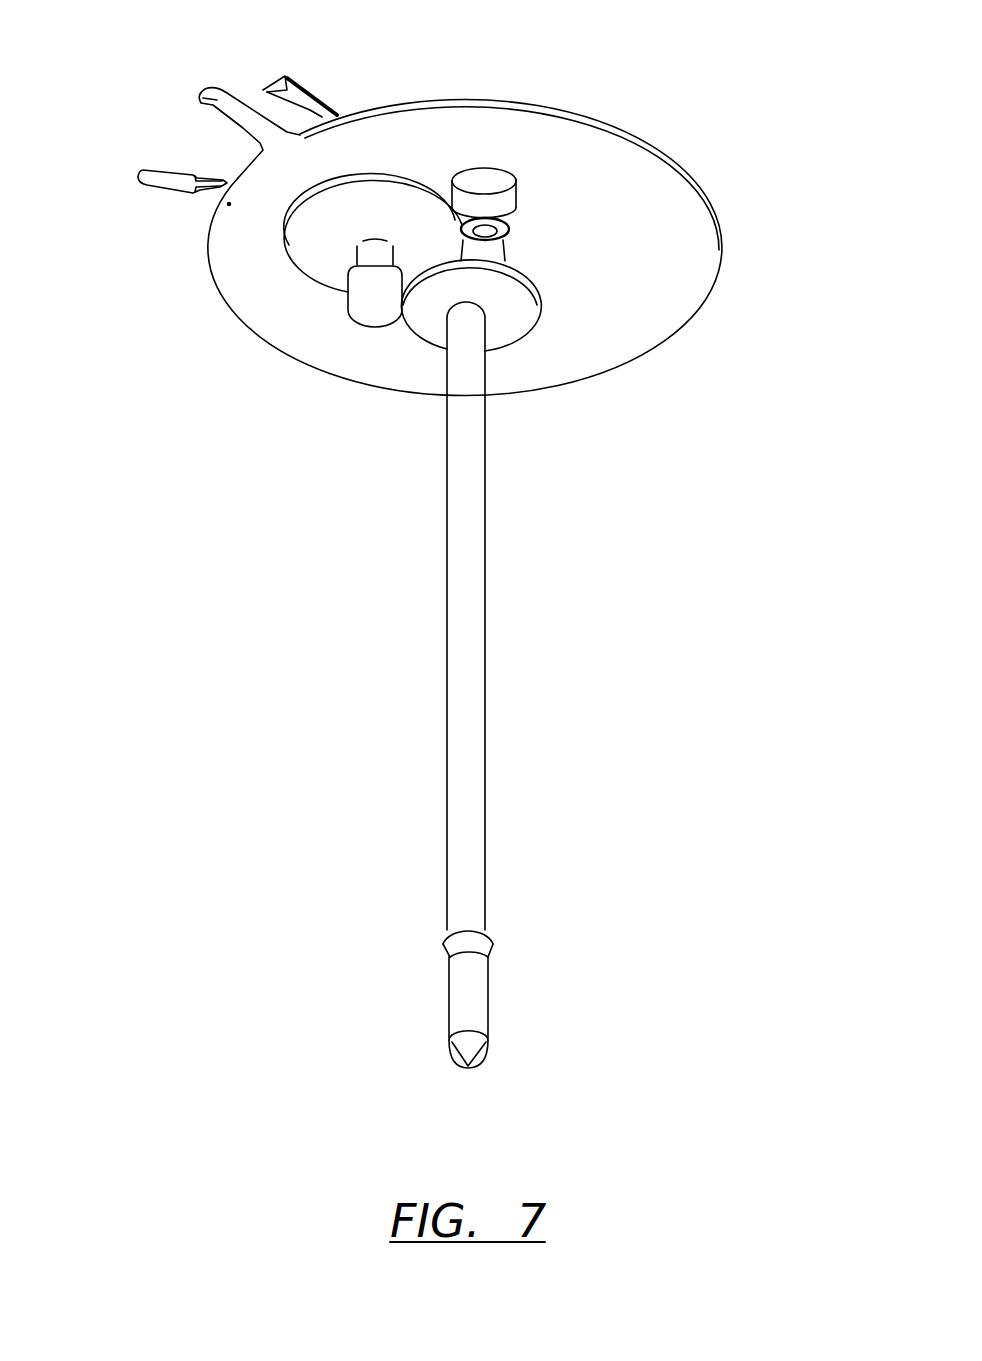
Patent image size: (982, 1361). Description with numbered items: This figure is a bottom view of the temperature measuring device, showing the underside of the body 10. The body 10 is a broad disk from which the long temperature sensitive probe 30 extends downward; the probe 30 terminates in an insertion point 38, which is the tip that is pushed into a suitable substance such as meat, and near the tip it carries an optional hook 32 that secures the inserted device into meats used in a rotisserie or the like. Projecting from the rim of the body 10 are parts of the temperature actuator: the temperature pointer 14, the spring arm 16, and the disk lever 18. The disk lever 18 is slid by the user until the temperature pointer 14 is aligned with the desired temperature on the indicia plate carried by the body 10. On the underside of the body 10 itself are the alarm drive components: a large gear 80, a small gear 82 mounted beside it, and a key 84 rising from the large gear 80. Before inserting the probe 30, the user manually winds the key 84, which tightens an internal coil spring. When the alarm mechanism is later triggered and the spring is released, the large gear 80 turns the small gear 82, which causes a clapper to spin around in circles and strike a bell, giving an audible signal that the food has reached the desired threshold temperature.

The body 10 is at (736, 237).
The temperature pointer 14 is at (285, 80).
The spring arm 16 is at (145, 178).
The disk lever 18 is at (215, 103).
The temperature sensitive probe 30 is at (485, 503).
The hook 32 is at (492, 937).
The insertion point 38 is at (472, 1048).
The large gear 80 is at (313, 257).
The small gear 82 is at (498, 188).
The key 84 is at (368, 303).